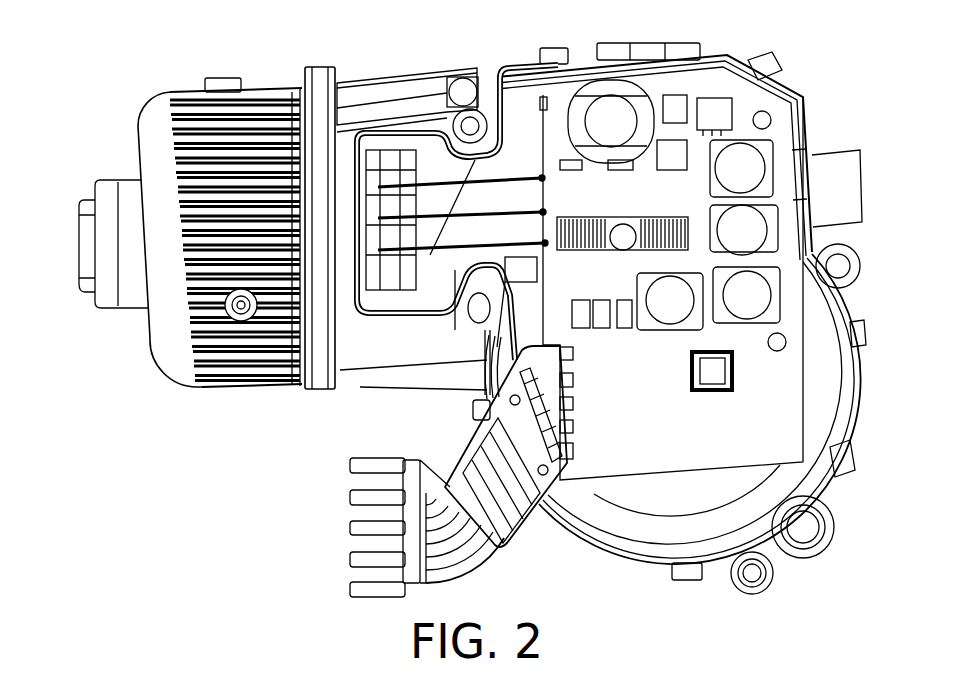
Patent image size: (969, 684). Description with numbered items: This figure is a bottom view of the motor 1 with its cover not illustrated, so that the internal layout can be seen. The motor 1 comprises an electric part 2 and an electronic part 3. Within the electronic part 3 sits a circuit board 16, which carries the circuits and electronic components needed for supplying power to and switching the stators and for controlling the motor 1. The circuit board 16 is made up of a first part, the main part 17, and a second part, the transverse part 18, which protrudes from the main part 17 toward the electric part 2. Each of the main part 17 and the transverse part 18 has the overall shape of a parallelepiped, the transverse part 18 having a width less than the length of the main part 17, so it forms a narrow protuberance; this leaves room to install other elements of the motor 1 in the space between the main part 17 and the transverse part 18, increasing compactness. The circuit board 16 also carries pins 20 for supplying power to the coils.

The motor 1 is at (144, 116).
The electric part 2 is at (85, 200).
The electronic part 3 is at (800, 95).
The circuit board 16 is at (766, 393).
The main part 17 is at (789, 378).
The transverse part 18 is at (493, 233).
The pins 20 is at (470, 244).